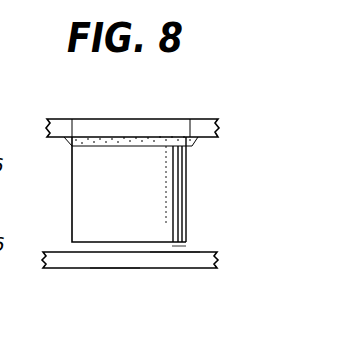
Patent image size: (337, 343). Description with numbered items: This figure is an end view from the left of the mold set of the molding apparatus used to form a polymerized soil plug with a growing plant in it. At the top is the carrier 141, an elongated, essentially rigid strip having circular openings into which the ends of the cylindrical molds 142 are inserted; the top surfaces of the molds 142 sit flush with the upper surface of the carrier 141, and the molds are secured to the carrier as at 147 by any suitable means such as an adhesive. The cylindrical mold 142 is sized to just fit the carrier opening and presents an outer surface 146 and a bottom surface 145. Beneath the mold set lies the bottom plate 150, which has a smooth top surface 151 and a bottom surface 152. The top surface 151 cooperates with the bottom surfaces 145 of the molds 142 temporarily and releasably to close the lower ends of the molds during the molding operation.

The carrier 141 is at (52, 129).
The securing means 147 is at (193, 145).
The outer surface 146 is at (85, 187).
The mold 142 is at (160, 201).
The bottom surface 145 is at (175, 247).
The top surface 151 is at (200, 252).
The bottom plate 150 is at (152, 268).
The bottom surface 152 is at (113, 269).